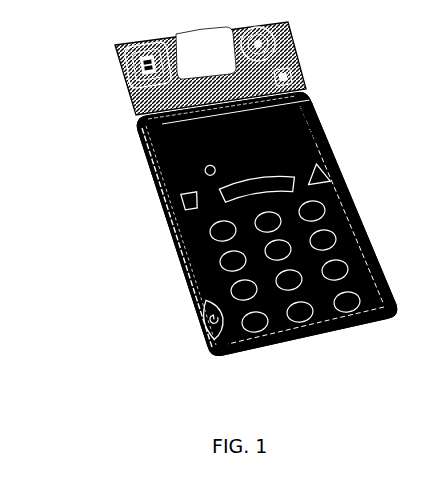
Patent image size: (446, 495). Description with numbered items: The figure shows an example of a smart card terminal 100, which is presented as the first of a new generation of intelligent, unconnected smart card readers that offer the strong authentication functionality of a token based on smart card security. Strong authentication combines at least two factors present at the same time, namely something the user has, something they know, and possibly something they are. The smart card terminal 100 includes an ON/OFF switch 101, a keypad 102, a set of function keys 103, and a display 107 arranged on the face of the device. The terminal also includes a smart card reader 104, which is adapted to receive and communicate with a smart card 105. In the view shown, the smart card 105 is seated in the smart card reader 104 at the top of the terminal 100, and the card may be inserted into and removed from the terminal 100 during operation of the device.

The smart card terminal 100 is at (73, 255).
The ON/OFF switch 101 is at (194, 322).
The keypad 102 is at (367, 213).
The set of function keys 103 is at (350, 176).
The smart card reader 104 is at (302, 80).
The smart card 105 is at (117, 68).
The display 107 is at (136, 155).